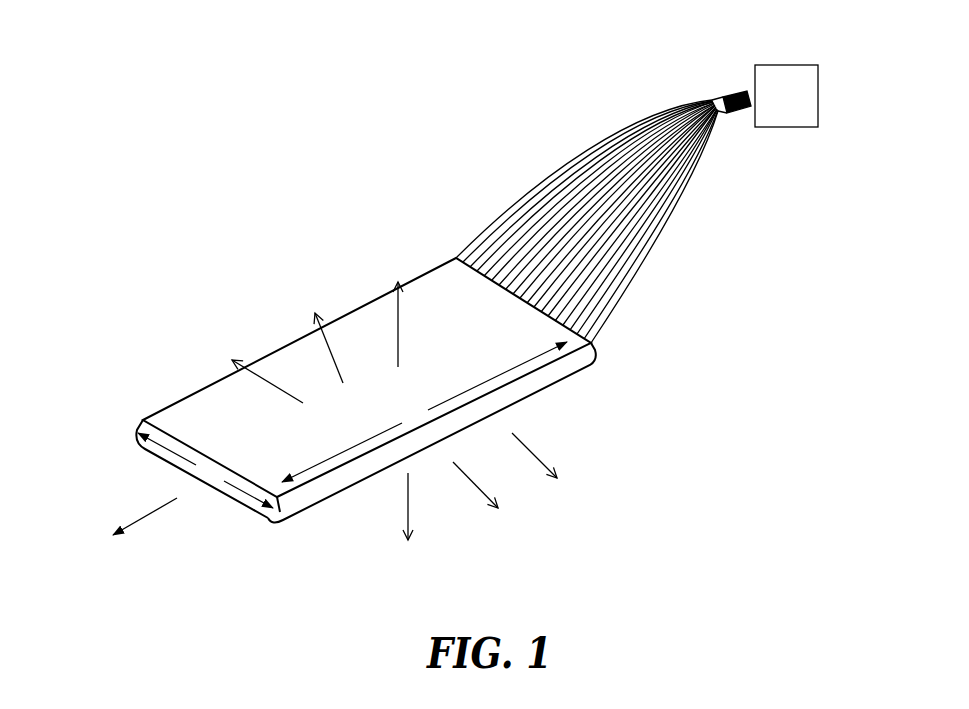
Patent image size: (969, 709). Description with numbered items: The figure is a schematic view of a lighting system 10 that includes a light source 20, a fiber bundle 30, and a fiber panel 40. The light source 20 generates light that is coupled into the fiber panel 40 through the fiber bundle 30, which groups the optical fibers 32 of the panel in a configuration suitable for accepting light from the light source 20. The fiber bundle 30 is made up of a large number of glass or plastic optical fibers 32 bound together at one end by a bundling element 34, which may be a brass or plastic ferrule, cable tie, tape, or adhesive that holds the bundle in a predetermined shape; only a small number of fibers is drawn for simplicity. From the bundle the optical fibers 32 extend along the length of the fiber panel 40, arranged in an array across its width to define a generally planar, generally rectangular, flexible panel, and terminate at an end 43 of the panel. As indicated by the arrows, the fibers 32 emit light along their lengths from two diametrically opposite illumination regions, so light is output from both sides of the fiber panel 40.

The lighting system 10 is at (217, 182).
The light source 20 is at (800, 108).
The fiber bundle 30 is at (540, 121).
The optical fibers 32 is at (632, 303).
The bundling element 34 is at (738, 110).
The fiber panel 40 is at (432, 284).
The end of the panel 43 is at (141, 420).